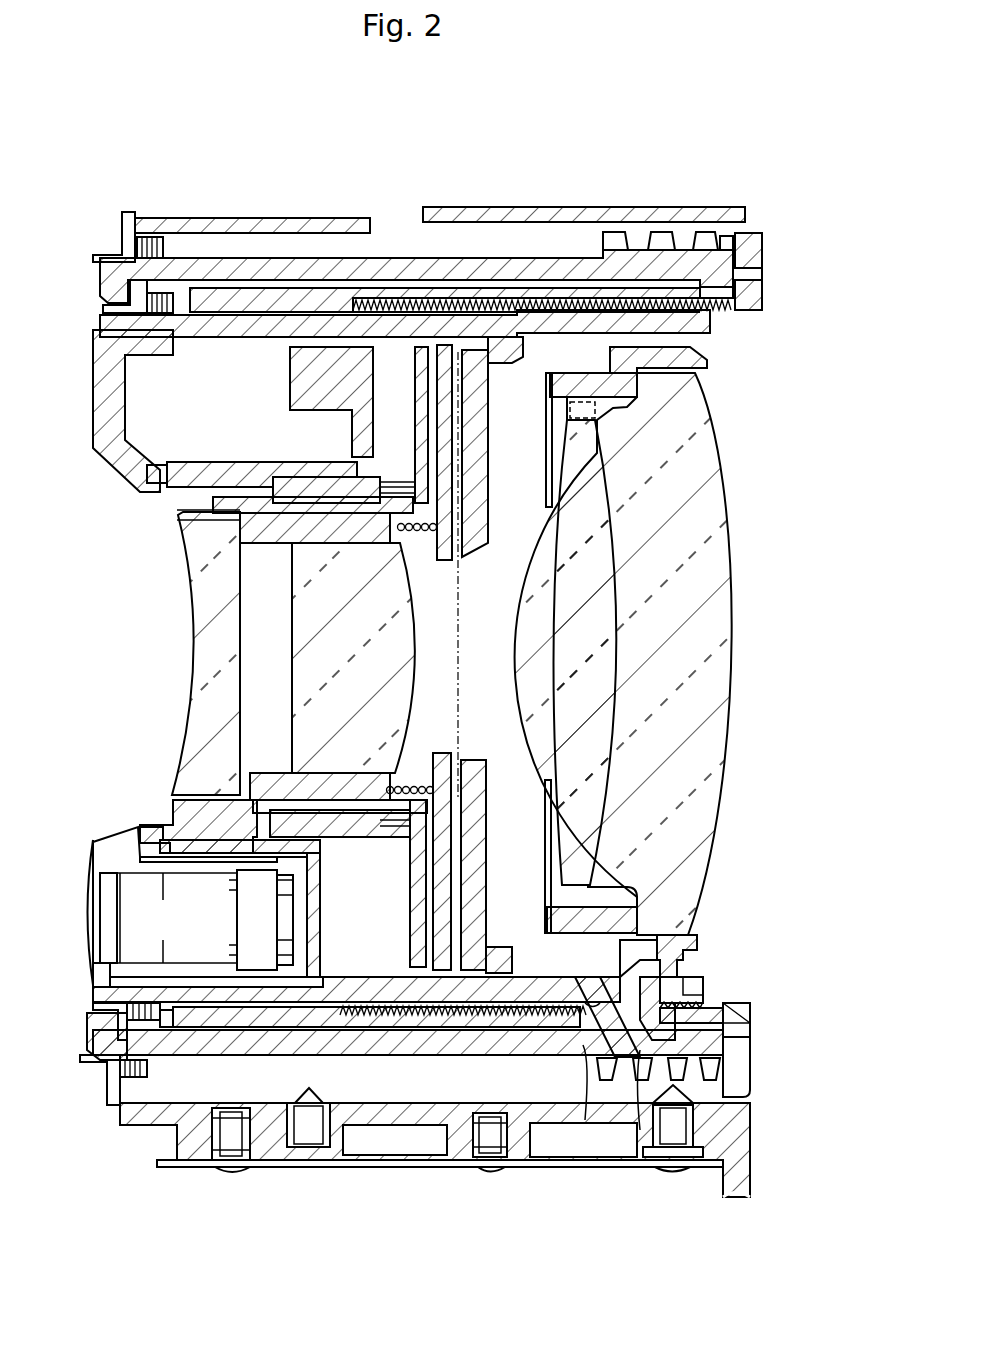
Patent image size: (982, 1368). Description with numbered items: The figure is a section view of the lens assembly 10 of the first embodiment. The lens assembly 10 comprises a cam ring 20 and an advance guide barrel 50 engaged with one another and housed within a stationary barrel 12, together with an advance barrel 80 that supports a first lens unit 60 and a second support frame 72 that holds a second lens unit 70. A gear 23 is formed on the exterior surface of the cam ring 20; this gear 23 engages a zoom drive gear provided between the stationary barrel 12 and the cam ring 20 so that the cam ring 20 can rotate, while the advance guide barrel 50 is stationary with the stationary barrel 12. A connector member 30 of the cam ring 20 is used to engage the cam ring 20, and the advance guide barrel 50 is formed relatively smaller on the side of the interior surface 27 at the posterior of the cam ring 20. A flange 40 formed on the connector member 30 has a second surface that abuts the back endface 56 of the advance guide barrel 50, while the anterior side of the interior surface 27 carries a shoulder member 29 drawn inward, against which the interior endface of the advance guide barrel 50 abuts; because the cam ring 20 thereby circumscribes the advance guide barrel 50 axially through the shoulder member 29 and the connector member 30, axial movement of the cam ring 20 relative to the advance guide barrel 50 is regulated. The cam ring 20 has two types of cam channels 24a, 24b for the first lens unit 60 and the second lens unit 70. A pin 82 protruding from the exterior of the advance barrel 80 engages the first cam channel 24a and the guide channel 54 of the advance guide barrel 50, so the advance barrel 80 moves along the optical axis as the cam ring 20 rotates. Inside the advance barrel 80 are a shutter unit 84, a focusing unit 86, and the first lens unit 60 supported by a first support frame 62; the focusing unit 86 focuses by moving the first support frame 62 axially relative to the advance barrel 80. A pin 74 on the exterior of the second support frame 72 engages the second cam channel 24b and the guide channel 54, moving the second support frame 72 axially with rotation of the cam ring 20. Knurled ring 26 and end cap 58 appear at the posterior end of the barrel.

The lens assembly 10 is at (548, 200).
The stationary barrel 12 is at (252, 218).
The cam ring 20 is at (386, 255).
The gear 23 is at (645, 205).
The first cam channel 24a is at (590, 1120).
The second cam channel 24b is at (690, 1120).
The knurled ring 26 is at (760, 240).
The interior surface 27 is at (718, 310).
The shoulder member 29 is at (200, 262).
The connector member 30 is at (768, 272).
The flange 40 is at (758, 310).
The advance guide barrel 50 is at (105, 1040).
The guide channel 54 is at (235, 1015).
The back endface 56 is at (748, 1005).
The end cap 58 is at (765, 1068).
The first lens unit 60 is at (192, 650).
The first support frame 62 is at (172, 795).
The second lens unit 70 is at (740, 652).
The second support frame 72 is at (700, 958).
The pin 74 is at (630, 1135).
The advance barrel 80 is at (95, 1000).
The pin 82 is at (572, 1130).
The shutter unit 84 is at (490, 485).
The focusing unit 86 is at (130, 920).